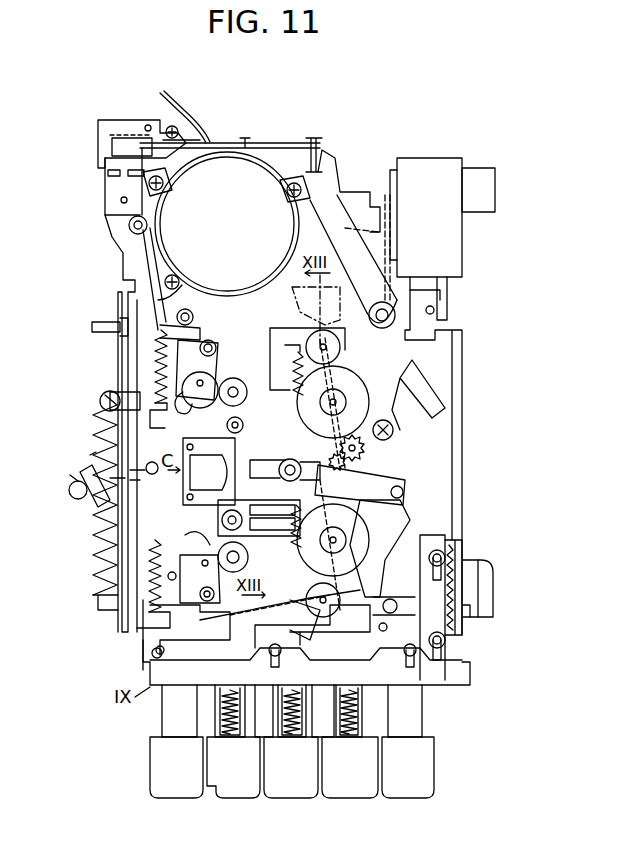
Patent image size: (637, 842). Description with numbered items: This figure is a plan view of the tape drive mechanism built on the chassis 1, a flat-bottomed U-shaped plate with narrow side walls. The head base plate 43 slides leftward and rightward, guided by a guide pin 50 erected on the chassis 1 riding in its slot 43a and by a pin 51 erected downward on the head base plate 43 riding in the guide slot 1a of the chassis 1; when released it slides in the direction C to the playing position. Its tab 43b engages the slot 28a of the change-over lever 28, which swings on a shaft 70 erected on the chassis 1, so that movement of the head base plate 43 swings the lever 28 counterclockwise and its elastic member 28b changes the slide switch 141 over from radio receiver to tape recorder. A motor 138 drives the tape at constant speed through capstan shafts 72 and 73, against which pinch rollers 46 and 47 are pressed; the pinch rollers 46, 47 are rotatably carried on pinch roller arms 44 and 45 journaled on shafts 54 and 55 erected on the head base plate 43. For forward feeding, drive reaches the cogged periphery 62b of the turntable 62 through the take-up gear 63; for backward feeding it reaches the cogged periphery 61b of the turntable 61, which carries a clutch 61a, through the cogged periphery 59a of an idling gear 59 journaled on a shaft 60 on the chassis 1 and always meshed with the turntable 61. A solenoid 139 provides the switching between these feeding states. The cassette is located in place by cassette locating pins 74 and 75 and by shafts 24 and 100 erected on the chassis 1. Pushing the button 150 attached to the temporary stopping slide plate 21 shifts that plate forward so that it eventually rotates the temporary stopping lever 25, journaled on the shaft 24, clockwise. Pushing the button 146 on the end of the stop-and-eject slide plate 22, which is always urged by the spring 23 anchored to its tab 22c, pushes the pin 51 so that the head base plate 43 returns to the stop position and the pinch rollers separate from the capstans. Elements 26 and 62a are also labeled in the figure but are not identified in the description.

The chassis 1 is at (148, 672).
The guide slot 1a is at (140, 480).
The temporary stopping slide plate 21 is at (422, 714).
The stop-and-eject slide plate 22 is at (162, 722).
The tab 22c is at (110, 392).
The spring 23 is at (98, 515).
The shaft 24 is at (378, 306).
The temporary stopping lever 25 is at (358, 220).
The pin 26 is at (318, 138).
The change-over lever 28 is at (152, 248).
The slot 28a is at (185, 290).
The elastic member 28b is at (108, 173).
The head base plate 43 is at (228, 596).
The slot 43a is at (332, 456).
The tab 43b is at (155, 334).
The pinch roller arm 44 is at (216, 362).
The pinch roller arm 45 is at (183, 505).
The pinch roller 46 is at (205, 402).
The pinch roller 47 is at (208, 552).
The guide pin 50 is at (279, 470).
The pin 51 is at (150, 465).
The shaft 54 is at (200, 338).
The shaft 55 is at (208, 602).
The idling gear 59 is at (360, 485).
The cogged periphery 59a is at (385, 420).
The shaft 60 is at (366, 448).
The turntable 61 is at (348, 375).
The clutch 61a is at (350, 385).
The cogged periphery 61b is at (300, 395).
The turntable 62 is at (345, 568).
The pin 62a is at (429, 601).
The cogged periphery 62b is at (320, 572).
The take-up gear 63 is at (350, 505).
The shaft 70 is at (147, 223).
The capstan shaft 72 is at (242, 392).
The capstan shaft 73 is at (246, 556).
The cassette locating pin 74 is at (243, 425).
The cassette locating pin 75 is at (238, 512).
The shaft 100 is at (436, 600).
The motor 138 is at (228, 165).
The solenoid 139 is at (427, 160).
The slide switch 141 is at (125, 145).
The button 146 is at (150, 767).
The button 150 is at (434, 769).